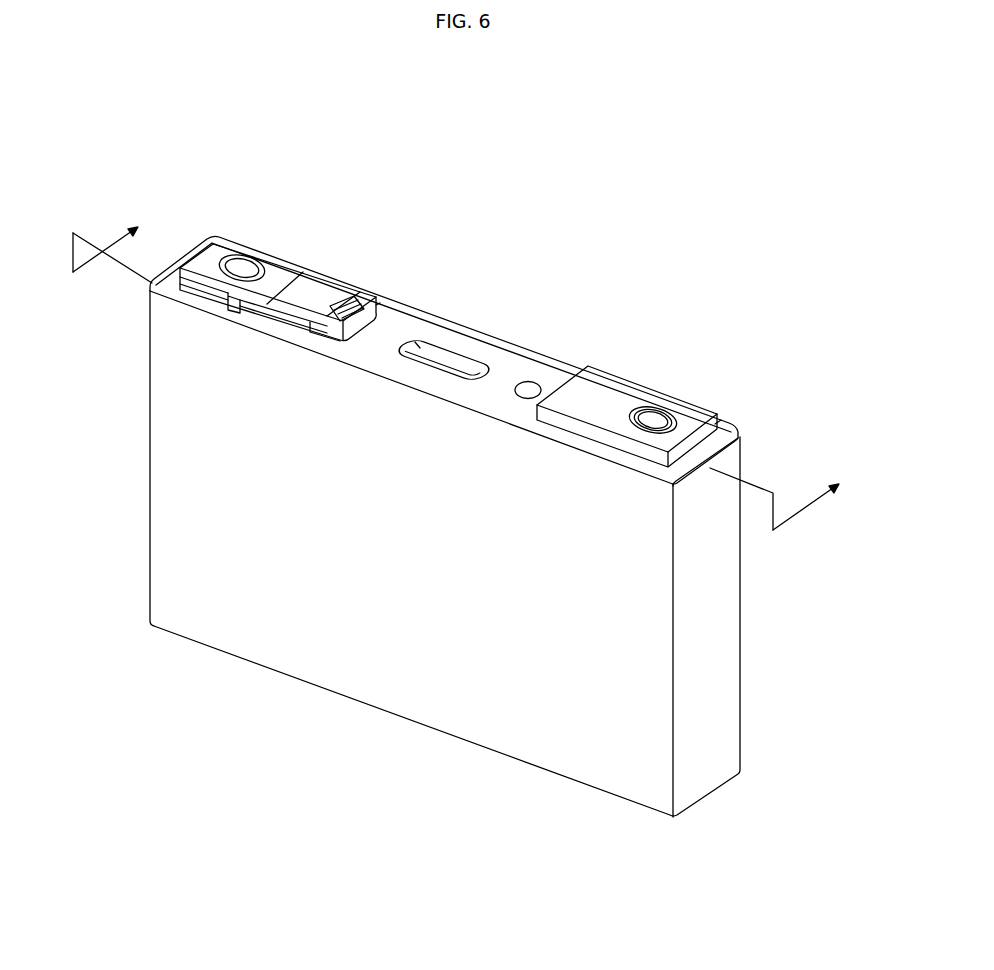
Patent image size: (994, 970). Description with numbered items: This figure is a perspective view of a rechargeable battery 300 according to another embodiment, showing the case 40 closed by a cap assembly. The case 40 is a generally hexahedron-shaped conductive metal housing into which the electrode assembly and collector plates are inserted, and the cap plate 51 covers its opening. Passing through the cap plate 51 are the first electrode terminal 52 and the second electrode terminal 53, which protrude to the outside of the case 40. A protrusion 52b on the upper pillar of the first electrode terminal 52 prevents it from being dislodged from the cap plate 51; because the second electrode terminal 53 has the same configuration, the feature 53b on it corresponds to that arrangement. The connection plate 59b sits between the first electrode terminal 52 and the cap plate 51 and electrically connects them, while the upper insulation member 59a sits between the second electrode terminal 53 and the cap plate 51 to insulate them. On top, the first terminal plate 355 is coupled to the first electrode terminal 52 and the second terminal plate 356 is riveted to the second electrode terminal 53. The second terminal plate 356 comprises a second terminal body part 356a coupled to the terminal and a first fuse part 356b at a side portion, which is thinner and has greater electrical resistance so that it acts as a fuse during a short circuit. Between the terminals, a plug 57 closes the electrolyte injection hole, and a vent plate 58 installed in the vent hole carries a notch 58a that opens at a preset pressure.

The rechargeable battery 300 is at (640, 270).
The case 40 is at (392, 678).
The cap plate 51 is at (514, 360).
The first electrode terminal 52 is at (653, 420).
The protrusion 52b is at (673, 413).
The second electrode terminal 53 is at (238, 270).
The first terminal plate 53b is at (256, 266).
The plug 57 is at (533, 388).
The vent plate 58 is at (461, 361).
The notch 58a is at (434, 360).
The upper insulation member 59a is at (358, 297).
The connection plate 59b is at (721, 420).
The first terminal plate 355 is at (608, 390).
The second terminal plate 356 is at (338, 162).
The second terminal body part 356a is at (323, 289).
The first fuse part 356b is at (298, 281).